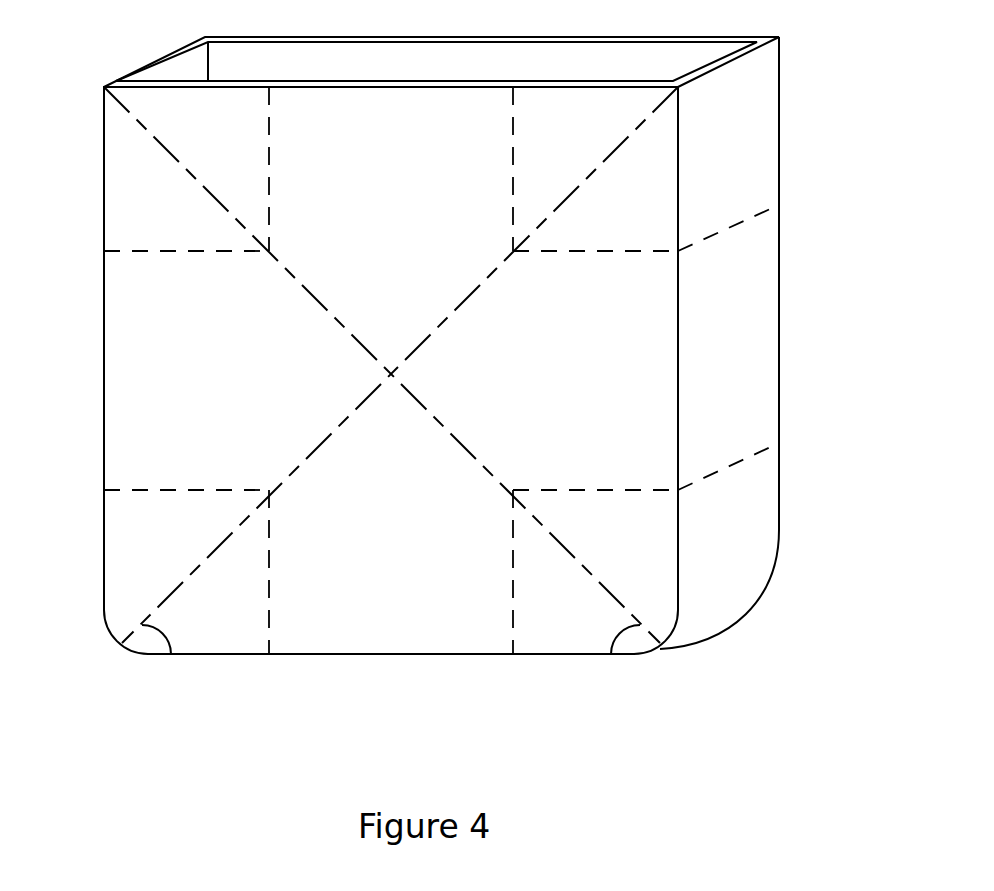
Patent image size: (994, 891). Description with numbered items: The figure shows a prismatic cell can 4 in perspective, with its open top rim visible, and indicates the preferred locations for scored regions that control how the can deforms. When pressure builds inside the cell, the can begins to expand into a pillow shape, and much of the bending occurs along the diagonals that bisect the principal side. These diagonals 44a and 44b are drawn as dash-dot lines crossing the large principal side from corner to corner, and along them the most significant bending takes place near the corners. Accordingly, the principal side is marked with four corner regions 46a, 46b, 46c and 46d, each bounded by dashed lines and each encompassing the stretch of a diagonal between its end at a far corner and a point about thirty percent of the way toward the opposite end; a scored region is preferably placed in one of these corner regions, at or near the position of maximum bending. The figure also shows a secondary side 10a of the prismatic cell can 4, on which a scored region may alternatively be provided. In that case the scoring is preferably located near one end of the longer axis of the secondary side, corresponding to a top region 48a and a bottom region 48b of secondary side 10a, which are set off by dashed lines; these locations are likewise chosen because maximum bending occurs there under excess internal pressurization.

The prismatic cell can 4 is at (122, 382).
The secondary side 10a is at (765, 342).
The top region 48a is at (765, 130).
The bottom region 48b is at (765, 520).
The corner region 46a is at (224, 145).
The corner region 46b is at (603, 140).
The corner region 46c is at (632, 543).
The corner region 46d is at (193, 548).
The diagonal 44a is at (611, 654).
The diagonal 44b is at (171, 654).